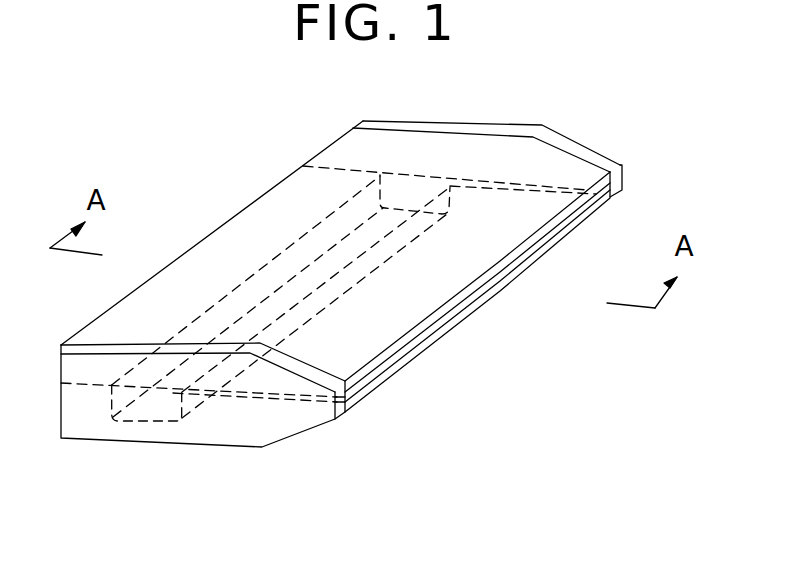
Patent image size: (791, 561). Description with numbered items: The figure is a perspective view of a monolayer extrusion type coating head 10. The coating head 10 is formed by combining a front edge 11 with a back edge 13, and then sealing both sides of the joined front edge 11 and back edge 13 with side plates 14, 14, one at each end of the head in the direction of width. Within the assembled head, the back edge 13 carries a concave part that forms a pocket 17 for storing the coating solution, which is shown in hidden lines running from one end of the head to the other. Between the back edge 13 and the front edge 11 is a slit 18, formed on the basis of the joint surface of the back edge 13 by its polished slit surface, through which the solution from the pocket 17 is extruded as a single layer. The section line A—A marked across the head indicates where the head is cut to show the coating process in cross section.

The coating head 10 is at (150, 172).
The front edge 11 is at (232, 242).
The back edge 13 is at (369, 395).
The side plate 14 is at (488, 123).
The pocket 17 is at (159, 425).
The slit 18 is at (413, 343).